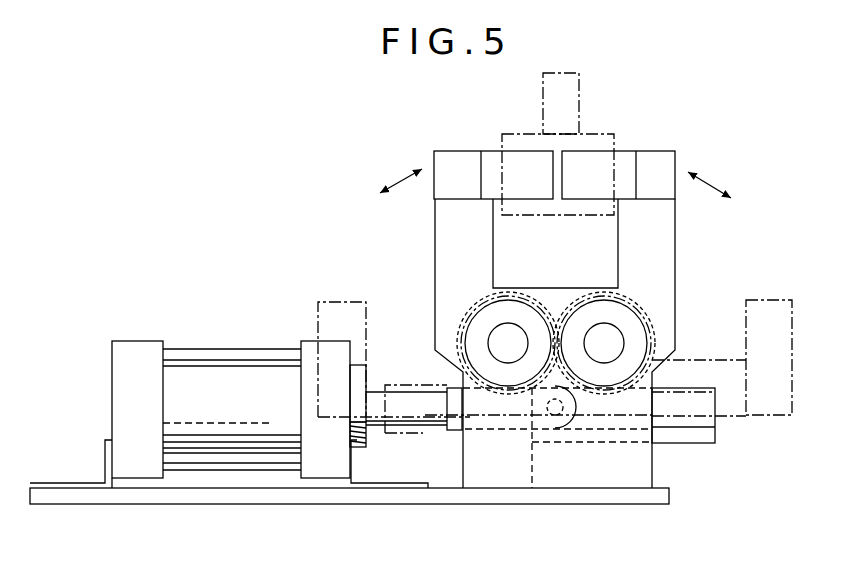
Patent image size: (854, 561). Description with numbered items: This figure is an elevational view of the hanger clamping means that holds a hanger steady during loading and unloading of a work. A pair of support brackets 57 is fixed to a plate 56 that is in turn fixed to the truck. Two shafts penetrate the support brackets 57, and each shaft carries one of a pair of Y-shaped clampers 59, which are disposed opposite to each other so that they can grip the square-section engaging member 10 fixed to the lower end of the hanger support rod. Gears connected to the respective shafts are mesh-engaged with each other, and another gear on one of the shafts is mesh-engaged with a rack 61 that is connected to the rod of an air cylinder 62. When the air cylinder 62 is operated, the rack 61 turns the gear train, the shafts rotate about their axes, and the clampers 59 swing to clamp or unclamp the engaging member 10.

The engaging member 10 is at (602, 135).
The plate 56 is at (402, 502).
The support brackets 57 is at (652, 463).
The Y-shaped clampers 59 is at (467, 168).
The rack 61 is at (688, 387).
The air cylinder 62 is at (225, 352).